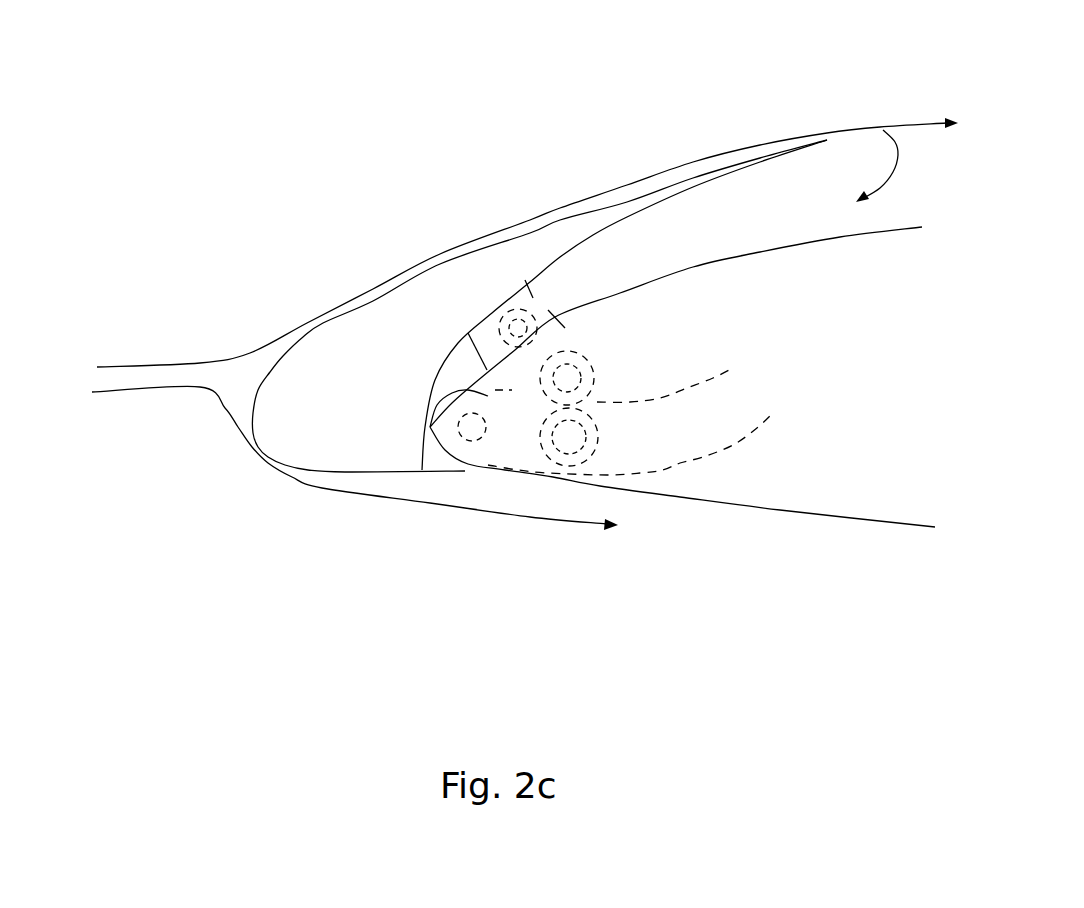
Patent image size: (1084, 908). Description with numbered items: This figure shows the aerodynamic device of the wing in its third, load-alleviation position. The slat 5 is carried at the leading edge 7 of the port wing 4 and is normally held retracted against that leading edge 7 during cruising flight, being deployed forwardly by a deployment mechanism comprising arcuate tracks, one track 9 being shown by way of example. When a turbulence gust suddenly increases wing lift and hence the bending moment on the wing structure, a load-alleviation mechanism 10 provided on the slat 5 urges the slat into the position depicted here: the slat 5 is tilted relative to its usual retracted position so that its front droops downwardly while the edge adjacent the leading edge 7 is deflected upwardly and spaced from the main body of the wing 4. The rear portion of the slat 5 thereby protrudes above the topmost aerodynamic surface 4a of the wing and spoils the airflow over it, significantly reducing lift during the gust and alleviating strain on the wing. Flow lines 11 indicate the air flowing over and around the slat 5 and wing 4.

The flow lines 11 is at (115, 367).
The slat 5 is at (330, 349).
The topmost aerodynamic surface 4a is at (900, 228).
The port wing 4 is at (835, 500).
The leading edge 7 is at (465, 447).
The track 9 is at (677, 467).
The load-alleviation mechanism 10 is at (604, 343).